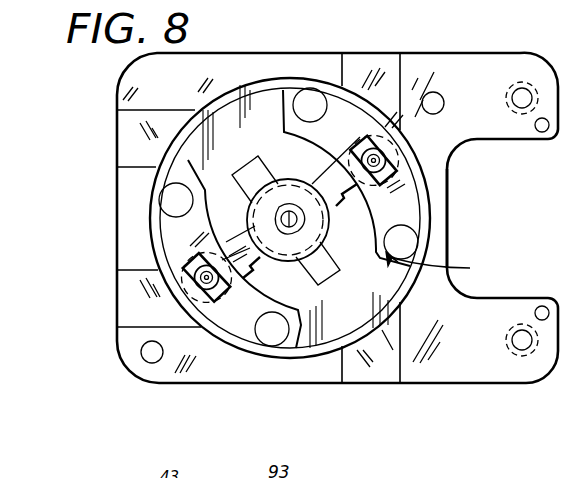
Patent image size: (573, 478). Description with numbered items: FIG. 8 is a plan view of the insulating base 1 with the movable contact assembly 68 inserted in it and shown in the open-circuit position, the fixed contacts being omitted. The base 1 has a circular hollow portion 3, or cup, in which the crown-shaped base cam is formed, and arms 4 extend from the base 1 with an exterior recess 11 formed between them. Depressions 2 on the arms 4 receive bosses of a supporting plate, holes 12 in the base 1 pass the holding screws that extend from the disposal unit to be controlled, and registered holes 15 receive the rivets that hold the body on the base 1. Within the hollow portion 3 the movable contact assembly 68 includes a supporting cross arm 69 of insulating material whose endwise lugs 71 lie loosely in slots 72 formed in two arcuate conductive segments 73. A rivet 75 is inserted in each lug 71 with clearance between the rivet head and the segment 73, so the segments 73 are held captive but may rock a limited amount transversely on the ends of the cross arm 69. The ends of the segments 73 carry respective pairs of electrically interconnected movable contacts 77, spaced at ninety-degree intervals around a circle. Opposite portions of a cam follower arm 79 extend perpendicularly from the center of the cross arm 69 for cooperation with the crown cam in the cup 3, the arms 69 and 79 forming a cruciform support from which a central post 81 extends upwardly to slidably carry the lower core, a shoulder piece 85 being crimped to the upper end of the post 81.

The insulating base 1 is at (190, 384).
The depressions 2 is at (542, 133).
The circular hollow portion 3 is at (257, 84).
The arms 4 is at (473, 66).
The exterior recess 11 is at (508, 140).
The holes 12 is at (525, 92).
The registered holes 15 is at (445, 106).
The movable contact assembly 68 is at (468, 268).
The supporting cross arm 69 is at (320, 176).
The endwise lugs 71 is at (378, 176).
The slots 72 is at (356, 142).
The arcuate conductive segments 73 is at (406, 212).
The rivet 75 is at (378, 160).
The movable contacts 77 is at (308, 100).
The cam follower arm 79 is at (252, 160).
The central post 81 is at (292, 230).
The shoulder piece 85 is at (288, 219).